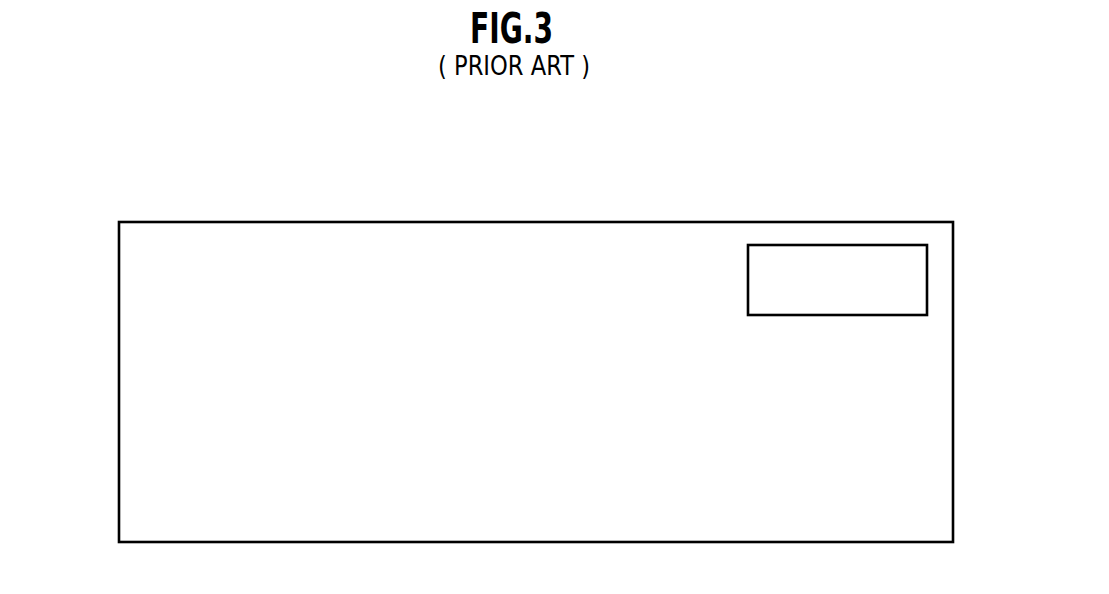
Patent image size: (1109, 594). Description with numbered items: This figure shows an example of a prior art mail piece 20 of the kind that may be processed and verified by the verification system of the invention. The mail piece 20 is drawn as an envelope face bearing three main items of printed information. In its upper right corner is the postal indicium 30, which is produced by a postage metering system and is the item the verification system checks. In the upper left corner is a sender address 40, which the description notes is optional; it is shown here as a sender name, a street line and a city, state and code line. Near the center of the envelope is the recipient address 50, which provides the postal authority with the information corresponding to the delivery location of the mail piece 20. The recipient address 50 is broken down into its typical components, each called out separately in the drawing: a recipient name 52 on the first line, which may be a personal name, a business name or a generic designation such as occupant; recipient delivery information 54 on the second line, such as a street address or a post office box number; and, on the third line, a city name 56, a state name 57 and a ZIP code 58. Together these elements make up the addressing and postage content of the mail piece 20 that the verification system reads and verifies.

The mail piece 20 is at (507, 222).
The postal indicium 30 is at (865, 245).
The sender address 40 is at (145, 282).
The recipient address 50 is at (588, 386).
The recipient name 52 is at (452, 402).
The recipient delivery information 54 is at (452, 425).
The city name 56 is at (452, 455).
The state name 57 is at (658, 467).
The ZIP code 58 is at (768, 455).